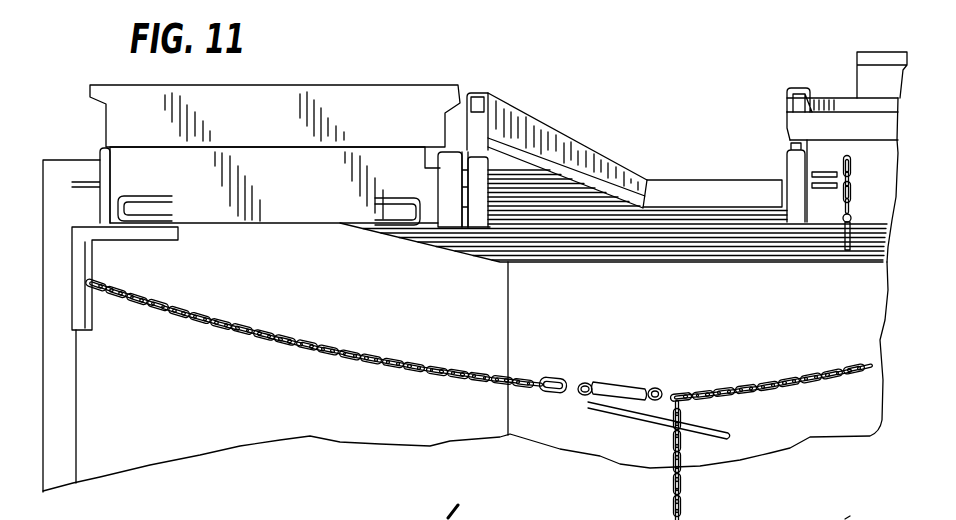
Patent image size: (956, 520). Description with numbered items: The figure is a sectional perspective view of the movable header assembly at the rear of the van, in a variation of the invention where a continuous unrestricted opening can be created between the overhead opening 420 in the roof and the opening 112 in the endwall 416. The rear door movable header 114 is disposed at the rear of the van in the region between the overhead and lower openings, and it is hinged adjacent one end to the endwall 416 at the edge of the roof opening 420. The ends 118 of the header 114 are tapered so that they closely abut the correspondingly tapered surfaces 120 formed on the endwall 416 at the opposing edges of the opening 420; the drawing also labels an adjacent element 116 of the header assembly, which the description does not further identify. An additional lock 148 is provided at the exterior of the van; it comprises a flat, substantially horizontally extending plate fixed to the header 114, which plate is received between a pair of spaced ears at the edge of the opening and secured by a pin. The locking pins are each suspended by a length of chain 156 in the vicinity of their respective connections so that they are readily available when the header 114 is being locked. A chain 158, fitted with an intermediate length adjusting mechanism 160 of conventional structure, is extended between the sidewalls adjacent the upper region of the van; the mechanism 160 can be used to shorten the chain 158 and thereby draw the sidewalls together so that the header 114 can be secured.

The opening in the endwall 112 is at (434, 511).
The rear door movable header 114 is at (318, 199).
The cargo platform 116 is at (463, 239).
The ends of the header 118 is at (105, 147).
The tapered surfaces 120 is at (478, 187).
The additional lock 148 is at (827, 512).
The length of chain 156 is at (852, 197).
The chain 158 is at (569, 368).
The intermediate length adjusting mechanism 160 is at (634, 388).
The endwall 416 is at (50, 440).
The overhead opening 420 is at (721, 91).